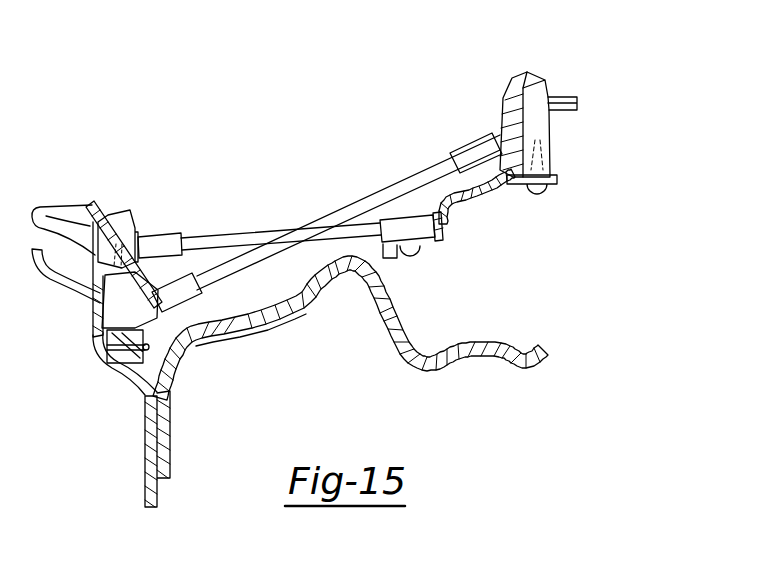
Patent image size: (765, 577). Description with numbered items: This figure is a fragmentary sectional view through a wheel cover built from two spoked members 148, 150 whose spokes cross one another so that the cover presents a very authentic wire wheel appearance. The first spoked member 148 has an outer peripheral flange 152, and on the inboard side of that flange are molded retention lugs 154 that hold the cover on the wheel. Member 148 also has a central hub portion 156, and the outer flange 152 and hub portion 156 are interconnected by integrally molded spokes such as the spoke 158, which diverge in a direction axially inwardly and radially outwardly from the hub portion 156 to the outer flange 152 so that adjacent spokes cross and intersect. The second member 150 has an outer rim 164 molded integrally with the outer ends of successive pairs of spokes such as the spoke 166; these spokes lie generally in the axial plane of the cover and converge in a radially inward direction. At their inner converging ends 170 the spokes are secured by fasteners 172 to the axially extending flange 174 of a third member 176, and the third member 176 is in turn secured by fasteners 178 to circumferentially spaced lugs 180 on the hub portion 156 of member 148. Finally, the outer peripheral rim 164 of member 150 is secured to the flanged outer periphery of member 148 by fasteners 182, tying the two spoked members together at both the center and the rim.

The spoked member 148 is at (85, 193).
The spoked member 150 is at (178, 222).
The outer peripheral flange 152 is at (50, 205).
The retention lugs 154 is at (100, 381).
The central hub portion 156 is at (550, 80).
The spoke 158 is at (360, 170).
The outer rim 164 is at (112, 222).
The spoke 166 is at (287, 232).
The inner converging ends 170 is at (397, 226).
The fasteners 172 is at (412, 258).
The axially extending flange 174 is at (449, 240).
The third member 176 is at (496, 206).
The fasteners 178 is at (537, 189).
The lugs 180 is at (545, 135).
The fasteners 182 is at (100, 316).